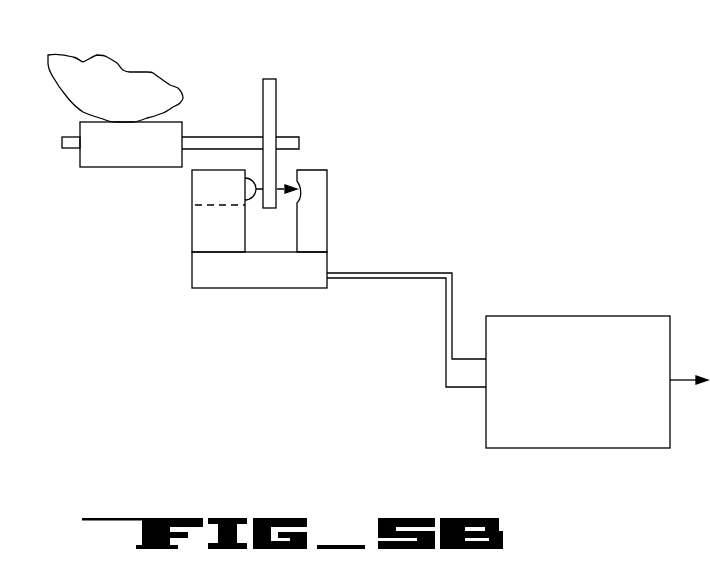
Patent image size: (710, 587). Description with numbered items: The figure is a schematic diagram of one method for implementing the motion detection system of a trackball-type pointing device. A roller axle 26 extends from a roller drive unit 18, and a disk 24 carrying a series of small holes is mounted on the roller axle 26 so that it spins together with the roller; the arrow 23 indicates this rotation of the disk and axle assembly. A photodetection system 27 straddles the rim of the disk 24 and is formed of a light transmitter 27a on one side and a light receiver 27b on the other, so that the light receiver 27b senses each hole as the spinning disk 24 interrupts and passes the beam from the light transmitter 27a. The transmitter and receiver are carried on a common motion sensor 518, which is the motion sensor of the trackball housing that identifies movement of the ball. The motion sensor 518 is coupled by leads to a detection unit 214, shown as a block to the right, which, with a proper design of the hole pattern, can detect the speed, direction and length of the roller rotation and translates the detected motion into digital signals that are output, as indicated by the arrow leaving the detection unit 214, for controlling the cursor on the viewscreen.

The motor 18 is at (92, 142).
The drive assembly 23 is at (217, 118).
The disk 24 is at (270, 92).
The roller axle 26 is at (290, 143).
The photodetection system 27 is at (261, 286).
The light transmitter 27a is at (210, 187).
The light receiver 27b is at (310, 195).
The motion sensor 518 is at (250, 303).
The detection unit 214 is at (504, 407).